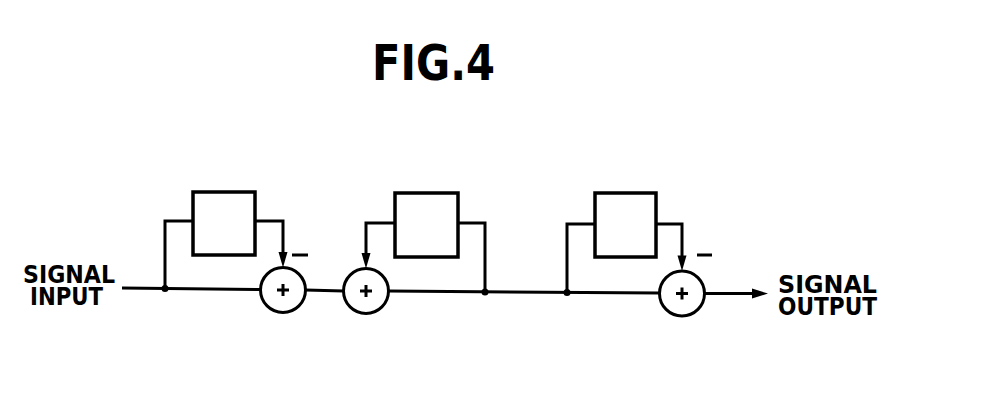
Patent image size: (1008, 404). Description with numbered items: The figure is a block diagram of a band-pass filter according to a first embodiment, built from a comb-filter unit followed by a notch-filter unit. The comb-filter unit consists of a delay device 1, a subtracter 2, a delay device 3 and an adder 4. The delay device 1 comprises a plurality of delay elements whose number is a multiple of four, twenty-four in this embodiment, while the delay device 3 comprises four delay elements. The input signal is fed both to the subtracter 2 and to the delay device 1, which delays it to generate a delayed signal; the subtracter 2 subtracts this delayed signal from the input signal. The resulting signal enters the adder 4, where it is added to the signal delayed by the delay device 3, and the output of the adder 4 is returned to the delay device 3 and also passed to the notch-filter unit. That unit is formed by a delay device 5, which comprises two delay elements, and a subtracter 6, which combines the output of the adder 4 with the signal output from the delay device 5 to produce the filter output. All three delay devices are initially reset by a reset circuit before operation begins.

The delay device 1 is at (243, 192).
The subtracter 2 is at (270, 308).
The delay device 3 is at (440, 193).
The adder 4 is at (380, 308).
The delay device 5 is at (633, 193).
The subtracter 6 is at (696, 310).